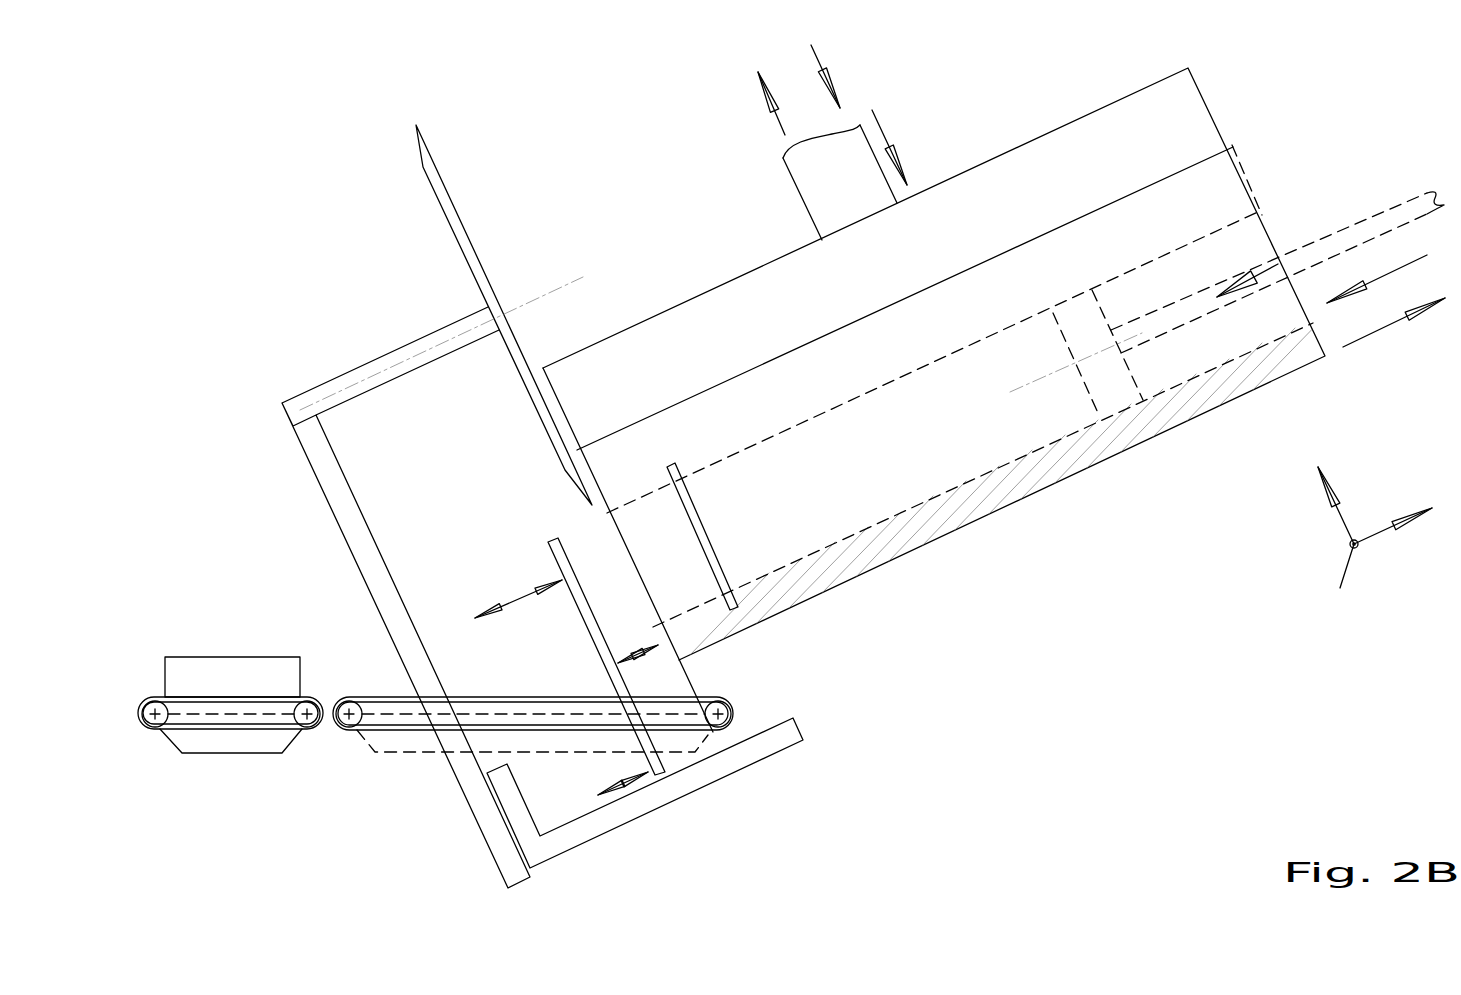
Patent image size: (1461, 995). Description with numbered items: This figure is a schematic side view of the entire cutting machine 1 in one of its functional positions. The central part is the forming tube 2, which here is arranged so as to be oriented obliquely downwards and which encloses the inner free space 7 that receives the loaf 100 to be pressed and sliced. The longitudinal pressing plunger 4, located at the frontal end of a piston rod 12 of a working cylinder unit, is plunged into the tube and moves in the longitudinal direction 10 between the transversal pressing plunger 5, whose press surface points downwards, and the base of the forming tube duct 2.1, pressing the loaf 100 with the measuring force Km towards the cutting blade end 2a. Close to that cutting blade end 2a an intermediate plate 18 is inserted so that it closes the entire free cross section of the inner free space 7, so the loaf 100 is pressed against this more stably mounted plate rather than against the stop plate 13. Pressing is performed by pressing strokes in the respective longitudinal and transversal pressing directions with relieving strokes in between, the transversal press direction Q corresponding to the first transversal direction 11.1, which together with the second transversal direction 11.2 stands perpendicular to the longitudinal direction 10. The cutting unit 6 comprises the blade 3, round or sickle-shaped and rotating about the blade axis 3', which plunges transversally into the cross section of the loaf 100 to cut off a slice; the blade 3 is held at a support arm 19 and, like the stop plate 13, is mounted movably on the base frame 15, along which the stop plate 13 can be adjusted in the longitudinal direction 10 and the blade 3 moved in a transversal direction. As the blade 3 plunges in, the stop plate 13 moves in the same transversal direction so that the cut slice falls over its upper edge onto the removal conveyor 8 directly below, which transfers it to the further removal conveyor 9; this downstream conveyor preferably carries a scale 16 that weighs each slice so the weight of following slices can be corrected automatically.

The cutting machine 1 is at (552, 187).
The forming tube 2 is at (1237, 103).
The cutting blade end 2a is at (539, 373).
The forming tube duct 2.1 is at (1075, 453).
The blade 3 is at (504, 315).
The blade axis 3' is at (452, 306).
The longitudinal pressing plunger 4 is at (1098, 351).
The transversal pressing plunger 5 is at (905, 287).
The cutting unit 6 is at (295, 240).
The inner free space 7 is at (934, 363).
The loaf 100 is at (983, 475).
The removal conveyor 8 is at (743, 705).
The further removal conveyor 9 is at (155, 693).
The longitudinal direction 10 is at (1331, 410).
The first transversal direction 11.1 is at (885, 135).
The second transversal direction 11.2 is at (1338, 585).
The piston rod 12 is at (1373, 223).
The stop plate 13 is at (585, 630).
The base frame 15 is at (577, 875).
The scale 16 is at (370, 750).
The intermediate plate 18 is at (677, 468).
The support arm 19 is at (327, 474).